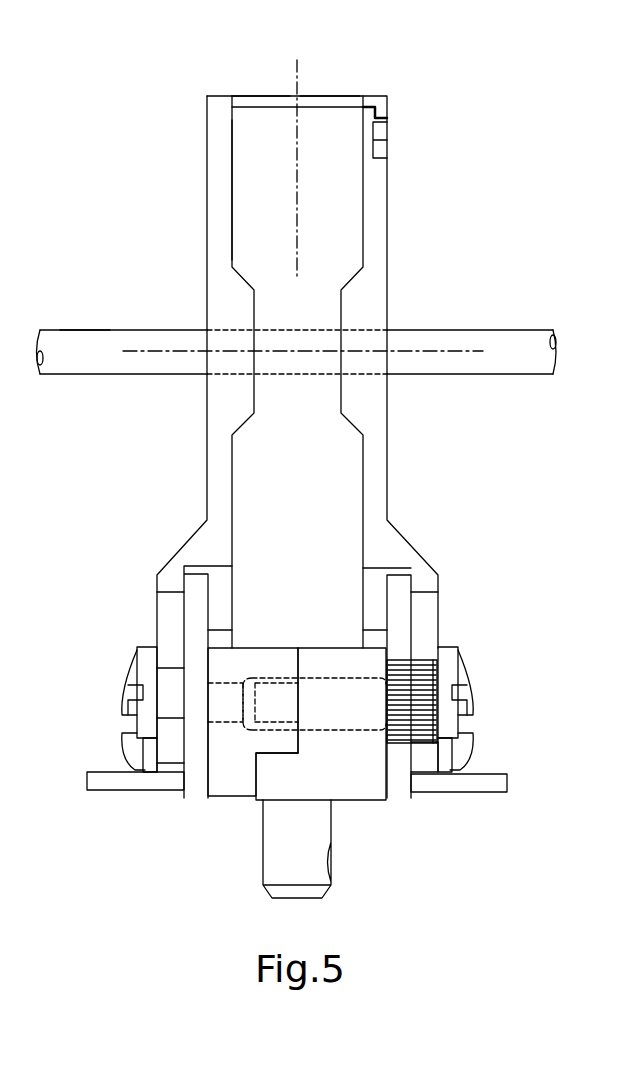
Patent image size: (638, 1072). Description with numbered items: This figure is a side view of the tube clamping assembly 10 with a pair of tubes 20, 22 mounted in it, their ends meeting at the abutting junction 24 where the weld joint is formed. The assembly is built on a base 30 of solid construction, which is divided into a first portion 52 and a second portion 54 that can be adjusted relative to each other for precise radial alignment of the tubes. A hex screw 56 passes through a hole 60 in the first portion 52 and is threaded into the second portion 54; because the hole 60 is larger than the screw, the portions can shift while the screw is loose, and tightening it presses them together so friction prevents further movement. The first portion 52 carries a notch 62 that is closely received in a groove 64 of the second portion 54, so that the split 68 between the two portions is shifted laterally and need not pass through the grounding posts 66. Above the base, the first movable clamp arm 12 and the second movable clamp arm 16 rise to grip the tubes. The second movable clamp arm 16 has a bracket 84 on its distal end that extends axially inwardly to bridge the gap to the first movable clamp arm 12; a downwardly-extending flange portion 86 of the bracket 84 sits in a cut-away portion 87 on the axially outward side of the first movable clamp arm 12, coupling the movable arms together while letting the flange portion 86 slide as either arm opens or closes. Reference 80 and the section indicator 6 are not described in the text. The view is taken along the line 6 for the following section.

The tube clamping assembly 10 is at (150, 100).
The first movable clamp arm 12 is at (373, 207).
The second movable clamp arm 16 is at (220, 208).
The tube 20 is at (455, 342).
The tube 22 is at (80, 345).
The abutting junction 24 is at (297, 330).
The base 30 is at (356, 868).
The first portion 52 is at (360, 777).
The second portion 54 is at (227, 767).
The hex screw 56 is at (412, 682).
The hole 60 is at (278, 673).
The notch 62 is at (295, 737).
The groove 64 is at (295, 737).
The grounding post 66 is at (288, 842).
The split 68 is at (298, 664).
The sleeve 80 is at (330, 100).
The bracket 84 is at (255, 98).
The flange portion 86 is at (378, 110).
The cut-away portion 87 is at (375, 142).
The section line 6- 6 is at (463, 822).